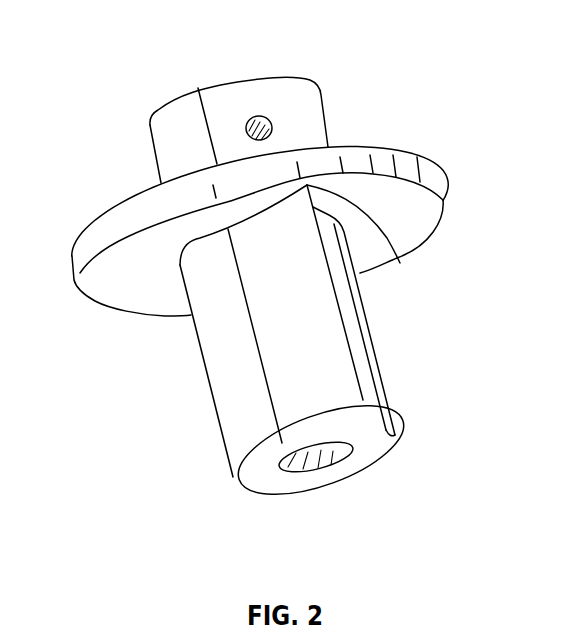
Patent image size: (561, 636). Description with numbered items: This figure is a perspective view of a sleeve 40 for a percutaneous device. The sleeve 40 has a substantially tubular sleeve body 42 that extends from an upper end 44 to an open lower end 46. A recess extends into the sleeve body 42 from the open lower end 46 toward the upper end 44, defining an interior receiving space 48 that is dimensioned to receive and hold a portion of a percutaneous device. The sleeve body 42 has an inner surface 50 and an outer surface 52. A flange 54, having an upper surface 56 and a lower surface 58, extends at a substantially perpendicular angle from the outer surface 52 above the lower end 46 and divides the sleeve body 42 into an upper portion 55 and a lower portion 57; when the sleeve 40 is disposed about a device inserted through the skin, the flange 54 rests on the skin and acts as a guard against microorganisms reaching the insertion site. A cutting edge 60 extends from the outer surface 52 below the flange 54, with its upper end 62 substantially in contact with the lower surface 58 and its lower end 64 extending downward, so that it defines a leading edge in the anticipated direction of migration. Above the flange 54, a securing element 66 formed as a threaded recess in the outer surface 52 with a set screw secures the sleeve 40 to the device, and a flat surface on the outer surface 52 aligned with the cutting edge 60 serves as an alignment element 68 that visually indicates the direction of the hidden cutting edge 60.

The sleeve 40 is at (421, 35).
The sleeve body 42 is at (377, 342).
The upper end 44 is at (167, 103).
The open lower end 46 is at (263, 481).
The interior receiving space 48 is at (338, 460).
The inner surface 50 is at (298, 465).
The outer surface 52 is at (238, 438).
The flange 54 is at (445, 181).
The upper portion 55 is at (162, 160).
The upper surface 56 is at (110, 210).
The lower portion 57 is at (208, 323).
The lower surface 58 is at (123, 293).
The cutting edge 60 is at (276, 339).
The upper end 62 is at (400, 262).
The lower end 64 is at (390, 415).
The securing element 66 is at (273, 127).
The alignment element 68 is at (208, 103).